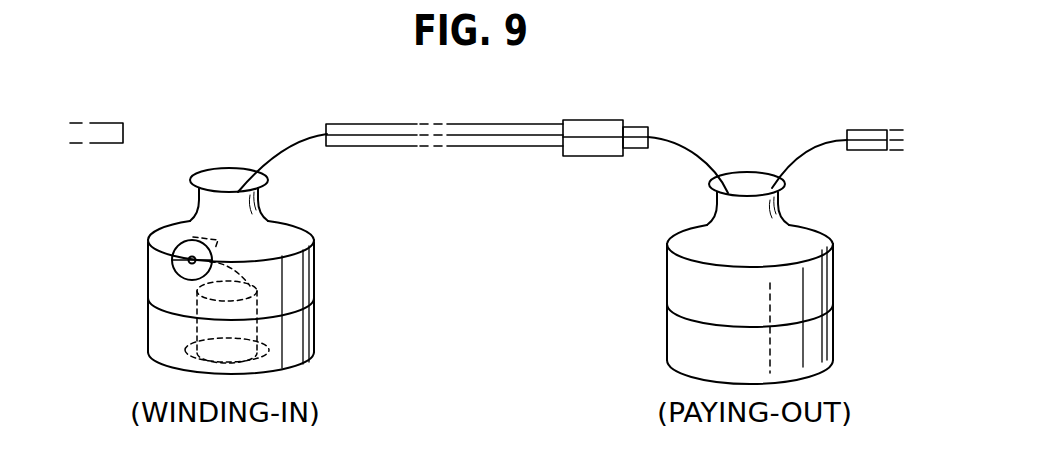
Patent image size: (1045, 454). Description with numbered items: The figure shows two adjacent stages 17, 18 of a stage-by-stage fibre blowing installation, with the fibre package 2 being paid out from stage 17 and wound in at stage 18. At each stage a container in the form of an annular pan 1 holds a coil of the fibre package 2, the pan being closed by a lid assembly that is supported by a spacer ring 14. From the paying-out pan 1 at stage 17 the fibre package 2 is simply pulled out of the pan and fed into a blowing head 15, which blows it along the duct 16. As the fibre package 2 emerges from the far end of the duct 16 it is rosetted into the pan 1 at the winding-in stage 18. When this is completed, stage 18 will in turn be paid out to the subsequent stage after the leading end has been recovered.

The annular pan 1 is at (340, 325).
The fibre package 2 is at (302, 141).
The spacer ring 14 is at (315, 273).
The blowing head 15 is at (607, 120).
The duct 16 is at (472, 148).
The stage 17 is at (857, 344).
The stage 18 is at (128, 322).